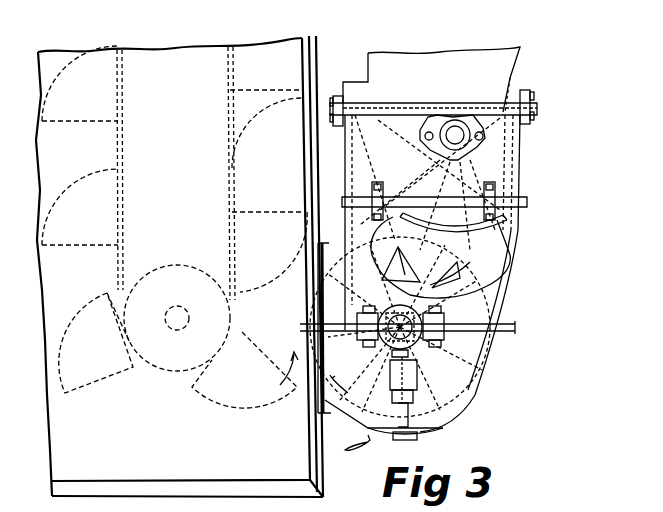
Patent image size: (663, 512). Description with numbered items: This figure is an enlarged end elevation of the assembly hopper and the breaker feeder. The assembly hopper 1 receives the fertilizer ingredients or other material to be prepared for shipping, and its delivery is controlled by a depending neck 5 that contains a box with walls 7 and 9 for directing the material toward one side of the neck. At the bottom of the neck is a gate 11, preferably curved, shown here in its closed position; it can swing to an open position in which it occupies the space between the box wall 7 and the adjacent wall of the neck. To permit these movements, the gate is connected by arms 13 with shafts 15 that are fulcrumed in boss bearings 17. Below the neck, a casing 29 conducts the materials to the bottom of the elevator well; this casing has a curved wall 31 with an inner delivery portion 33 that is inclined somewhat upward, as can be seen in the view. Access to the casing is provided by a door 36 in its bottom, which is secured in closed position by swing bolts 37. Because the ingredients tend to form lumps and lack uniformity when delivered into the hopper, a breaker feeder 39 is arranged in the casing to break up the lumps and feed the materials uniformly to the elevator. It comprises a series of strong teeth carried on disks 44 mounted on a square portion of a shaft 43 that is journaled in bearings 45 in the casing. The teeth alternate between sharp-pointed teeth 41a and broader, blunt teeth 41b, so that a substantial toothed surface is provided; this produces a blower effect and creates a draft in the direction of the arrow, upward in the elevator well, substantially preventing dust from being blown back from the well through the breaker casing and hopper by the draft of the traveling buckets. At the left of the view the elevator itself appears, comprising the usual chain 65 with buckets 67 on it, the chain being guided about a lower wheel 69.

The assembly hopper 1 is at (510, 62).
The depending neck 5 is at (528, 188).
The box wall 7 is at (377, 157).
The box wall 9 is at (507, 153).
The gate 11 is at (503, 237).
The arms 13 is at (483, 173).
The shafts 15 is at (505, 131).
The boss bearings 17 is at (455, 133).
The casing 29 is at (493, 295).
The curved wall 31 is at (465, 405).
The inner delivery portion 33 is at (348, 393).
The door 36 is at (368, 436).
The swing bolts 37 is at (417, 434).
The breaker feeder 39 is at (315, 277).
The sharp-pointed teeth 41a is at (442, 337).
The blunt teeth 41b is at (485, 275).
The shaft 43 is at (355, 320).
The disks 44 is at (353, 300).
The bearings 45 is at (448, 345).
The chain 65 is at (125, 138).
The buckets 67 is at (98, 188).
The lower wheel 69 is at (165, 265).